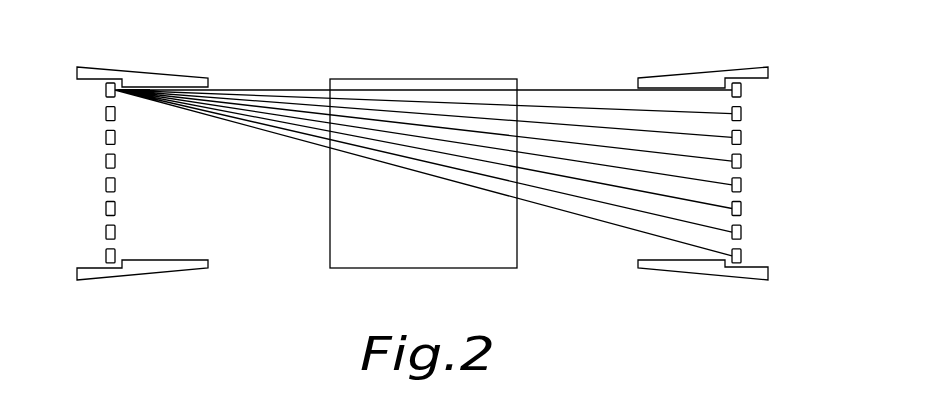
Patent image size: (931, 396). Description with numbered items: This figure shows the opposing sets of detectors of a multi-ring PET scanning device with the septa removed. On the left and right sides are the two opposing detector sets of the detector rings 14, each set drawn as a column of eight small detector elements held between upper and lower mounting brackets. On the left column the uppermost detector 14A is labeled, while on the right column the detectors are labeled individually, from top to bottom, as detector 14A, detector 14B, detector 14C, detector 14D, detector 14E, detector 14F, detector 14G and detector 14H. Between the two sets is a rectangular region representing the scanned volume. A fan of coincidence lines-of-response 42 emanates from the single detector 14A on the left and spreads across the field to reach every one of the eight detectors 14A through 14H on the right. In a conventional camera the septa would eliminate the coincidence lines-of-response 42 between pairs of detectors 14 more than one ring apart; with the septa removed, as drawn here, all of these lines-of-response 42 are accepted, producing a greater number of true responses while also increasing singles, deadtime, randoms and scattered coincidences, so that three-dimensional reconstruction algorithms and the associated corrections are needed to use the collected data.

The detector rings 14 is at (182, 213).
The detector 14A is at (105, 90).
The detector 14B is at (742, 114).
The detector 14C is at (742, 137).
The detector 14D is at (742, 161).
The detector 14E is at (742, 185).
The detector 14F is at (742, 208).
The detector 14G is at (742, 232).
The detector 14H is at (742, 256).
The coincidence lines-of-response 42 is at (605, 146).